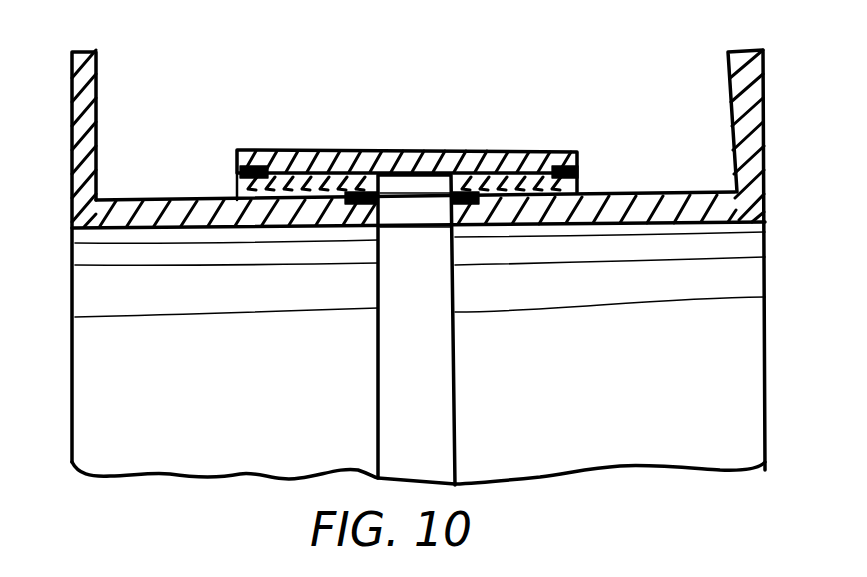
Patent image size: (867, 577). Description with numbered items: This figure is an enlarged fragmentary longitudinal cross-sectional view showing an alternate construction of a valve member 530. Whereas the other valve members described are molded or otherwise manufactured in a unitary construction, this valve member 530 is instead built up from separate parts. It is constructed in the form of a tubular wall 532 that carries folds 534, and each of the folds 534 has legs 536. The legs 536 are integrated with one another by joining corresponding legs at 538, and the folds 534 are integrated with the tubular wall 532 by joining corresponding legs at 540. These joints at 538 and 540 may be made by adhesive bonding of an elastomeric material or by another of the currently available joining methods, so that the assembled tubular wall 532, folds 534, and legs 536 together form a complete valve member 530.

The valve member 530 is at (729, 71).
The tubular wall 532 is at (664, 196).
The folds 534 is at (268, 150).
The legs 536 is at (300, 178).
The joining of corresponding legs 538 is at (240, 171).
The joining of legs to tubular wall 540 is at (352, 205).